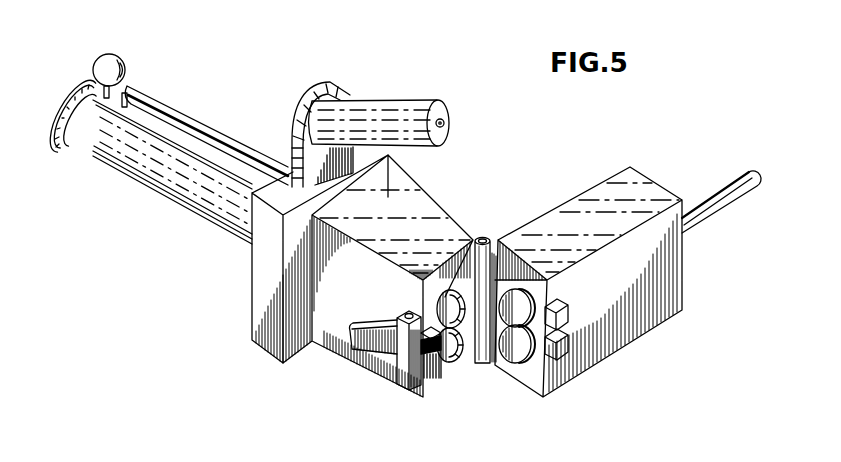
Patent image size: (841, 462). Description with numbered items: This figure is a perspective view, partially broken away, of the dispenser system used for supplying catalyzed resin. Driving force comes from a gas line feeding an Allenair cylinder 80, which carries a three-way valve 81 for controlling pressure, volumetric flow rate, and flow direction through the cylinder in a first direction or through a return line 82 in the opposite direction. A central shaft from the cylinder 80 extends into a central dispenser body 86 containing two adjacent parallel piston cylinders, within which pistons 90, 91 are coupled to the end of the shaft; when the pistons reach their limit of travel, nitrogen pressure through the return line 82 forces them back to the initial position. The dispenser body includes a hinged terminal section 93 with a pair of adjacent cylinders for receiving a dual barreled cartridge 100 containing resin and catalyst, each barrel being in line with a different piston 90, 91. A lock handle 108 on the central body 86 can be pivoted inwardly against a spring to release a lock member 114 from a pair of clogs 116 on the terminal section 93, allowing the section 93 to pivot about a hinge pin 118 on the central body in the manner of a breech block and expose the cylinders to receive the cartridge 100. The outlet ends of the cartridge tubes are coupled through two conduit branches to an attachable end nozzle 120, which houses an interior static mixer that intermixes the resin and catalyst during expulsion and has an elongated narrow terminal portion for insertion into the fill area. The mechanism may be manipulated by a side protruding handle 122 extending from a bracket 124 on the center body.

The cylinder 80 is at (203, 217).
The three-way valve 81 is at (124, 62).
The return line 82 is at (158, 98).
The bracket 124 is at (328, 82).
The side protruding handle 122 is at (390, 100).
The central dispenser body 86 is at (402, 203).
The piston 90 is at (478, 236).
The hinge pin 118 is at (494, 237).
The piston 91 is at (463, 347).
The hinged terminal section 93 is at (594, 185).
The dual barreled cartridge 100 is at (525, 362).
The clogs 116 is at (570, 318).
The end nozzle 120 is at (733, 180).
The lock handle 108 is at (370, 355).
The lock member 114 is at (408, 372).